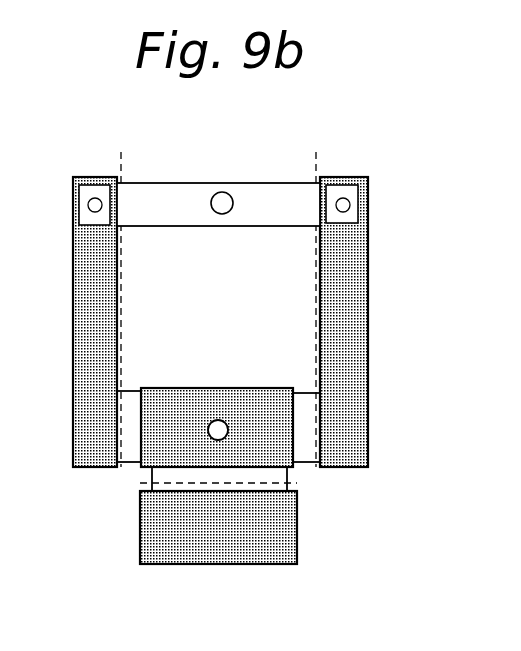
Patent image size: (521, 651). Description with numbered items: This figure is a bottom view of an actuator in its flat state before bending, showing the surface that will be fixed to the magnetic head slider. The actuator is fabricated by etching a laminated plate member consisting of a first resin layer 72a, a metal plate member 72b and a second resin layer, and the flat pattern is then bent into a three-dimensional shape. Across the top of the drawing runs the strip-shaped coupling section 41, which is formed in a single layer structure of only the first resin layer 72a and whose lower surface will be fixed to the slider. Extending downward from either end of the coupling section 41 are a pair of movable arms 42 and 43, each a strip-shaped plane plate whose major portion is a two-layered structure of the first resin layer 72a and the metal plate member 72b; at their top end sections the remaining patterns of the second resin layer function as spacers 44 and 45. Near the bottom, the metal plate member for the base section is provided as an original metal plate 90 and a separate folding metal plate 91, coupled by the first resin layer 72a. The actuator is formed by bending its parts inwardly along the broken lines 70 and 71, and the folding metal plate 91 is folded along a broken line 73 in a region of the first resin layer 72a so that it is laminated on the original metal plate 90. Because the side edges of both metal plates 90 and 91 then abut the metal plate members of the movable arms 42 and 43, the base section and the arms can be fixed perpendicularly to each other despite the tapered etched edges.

The coupling section 41 is at (178, 193).
The movable arm 42 is at (92, 328).
The movable arm 43 is at (348, 323).
The spacer 44 is at (83, 220).
The spacer 45 is at (350, 208).
The broken line 70 is at (122, 472).
The broken line 71 is at (292, 474).
The first resin layer 72a is at (272, 202).
The metal plate member 72b is at (83, 248).
The broken line 73 is at (288, 470).
The original metal plate 90 is at (245, 395).
The folding metal plate 91 is at (222, 545).